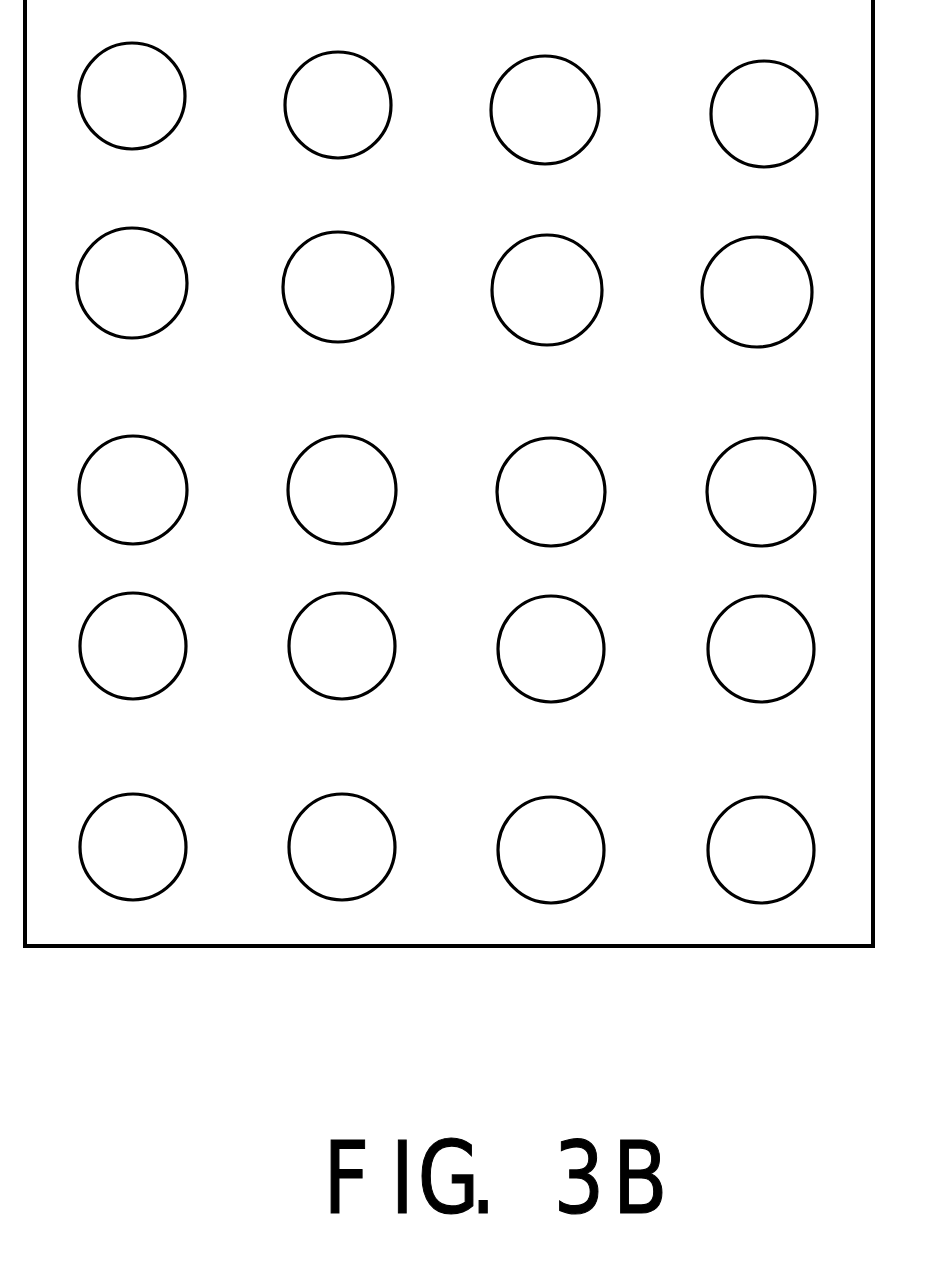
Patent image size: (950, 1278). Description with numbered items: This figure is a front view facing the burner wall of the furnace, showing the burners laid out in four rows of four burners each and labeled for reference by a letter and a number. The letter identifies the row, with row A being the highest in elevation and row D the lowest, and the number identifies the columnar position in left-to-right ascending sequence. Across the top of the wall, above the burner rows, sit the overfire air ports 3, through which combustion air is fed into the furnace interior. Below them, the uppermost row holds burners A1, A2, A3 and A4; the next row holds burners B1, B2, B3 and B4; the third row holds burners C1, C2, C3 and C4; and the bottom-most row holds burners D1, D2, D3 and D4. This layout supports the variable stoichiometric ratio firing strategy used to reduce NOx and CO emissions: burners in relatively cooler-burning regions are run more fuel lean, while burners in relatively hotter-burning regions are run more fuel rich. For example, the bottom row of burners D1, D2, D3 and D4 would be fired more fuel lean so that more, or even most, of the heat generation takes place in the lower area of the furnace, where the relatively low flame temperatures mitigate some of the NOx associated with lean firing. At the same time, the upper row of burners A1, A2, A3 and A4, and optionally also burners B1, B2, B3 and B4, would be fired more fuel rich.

The overfire air ports 3 is at (448, 105).
The burner A1 is at (132, 283).
The burner A2 is at (338, 287).
The burner A3 is at (547, 290).
The burner A4 is at (757, 292).
The burner B1 is at (133, 490).
The burner B2 is at (342, 490).
The burner B3 is at (551, 492).
The burner B4 is at (761, 492).
The burner C1 is at (133, 646).
The burner C2 is at (342, 646).
The burner C3 is at (551, 649).
The burner C4 is at (761, 649).
The burner D1 is at (133, 847).
The burner D2 is at (342, 847).
The burner D3 is at (551, 850).
The burner D4 is at (761, 850).